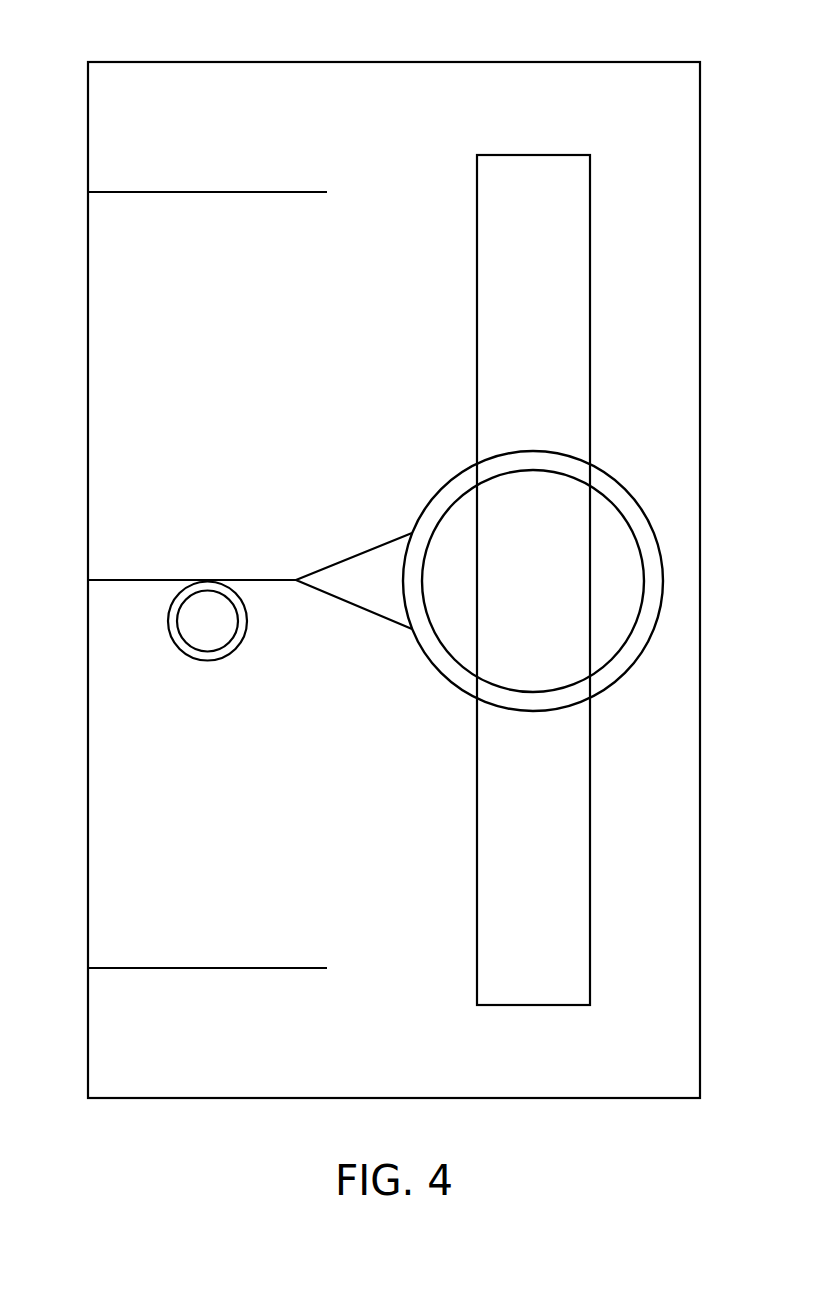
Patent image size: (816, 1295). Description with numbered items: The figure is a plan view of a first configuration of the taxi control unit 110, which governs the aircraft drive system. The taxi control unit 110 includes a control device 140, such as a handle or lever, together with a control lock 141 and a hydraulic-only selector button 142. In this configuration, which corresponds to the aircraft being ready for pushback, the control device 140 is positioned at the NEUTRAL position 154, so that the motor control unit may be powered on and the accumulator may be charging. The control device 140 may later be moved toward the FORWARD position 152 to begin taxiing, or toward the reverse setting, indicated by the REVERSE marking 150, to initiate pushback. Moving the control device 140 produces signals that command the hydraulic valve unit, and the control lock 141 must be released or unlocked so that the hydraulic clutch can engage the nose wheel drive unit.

The taxi control unit 110 is at (398, 62).
The control device 140 is at (613, 478).
The control lock 141 is at (605, 665).
The hydraulic-only selector button 142 is at (247, 627).
The reverse indicator 150 is at (203, 917).
The FORWARD position 152 is at (203, 140).
The NEUTRAL position 154 is at (203, 527).